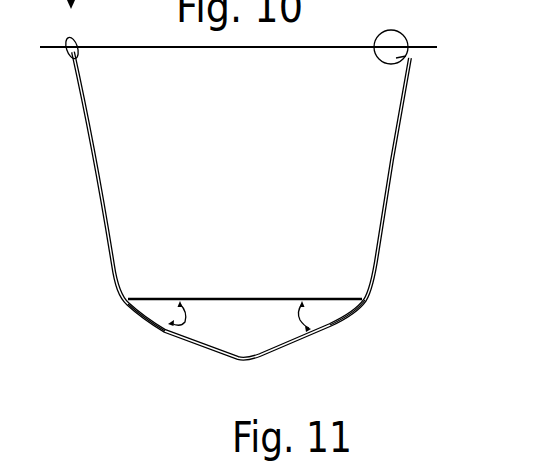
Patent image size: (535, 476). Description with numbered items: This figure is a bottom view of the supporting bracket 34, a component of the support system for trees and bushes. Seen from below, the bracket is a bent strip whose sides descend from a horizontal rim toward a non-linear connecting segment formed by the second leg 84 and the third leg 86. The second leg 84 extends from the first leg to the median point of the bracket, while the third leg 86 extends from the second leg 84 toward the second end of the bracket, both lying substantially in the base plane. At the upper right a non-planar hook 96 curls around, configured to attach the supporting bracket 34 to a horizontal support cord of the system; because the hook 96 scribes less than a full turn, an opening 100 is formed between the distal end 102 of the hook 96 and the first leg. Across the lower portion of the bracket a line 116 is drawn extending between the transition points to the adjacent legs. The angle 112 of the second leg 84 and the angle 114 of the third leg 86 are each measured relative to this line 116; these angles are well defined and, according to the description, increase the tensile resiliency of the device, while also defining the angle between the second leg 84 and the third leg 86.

The supporting bracket 34 is at (377, 250).
The non-planar hook 96 is at (390, 31).
The distal end 102 is at (388, 63).
The opening 100 is at (397, 69).
The line 116 is at (254, 298).
The second leg 84 is at (137, 338).
The third leg 86 is at (349, 337).
The angle of the second leg 112 is at (185, 322).
The angle of the third leg 114 is at (300, 320).